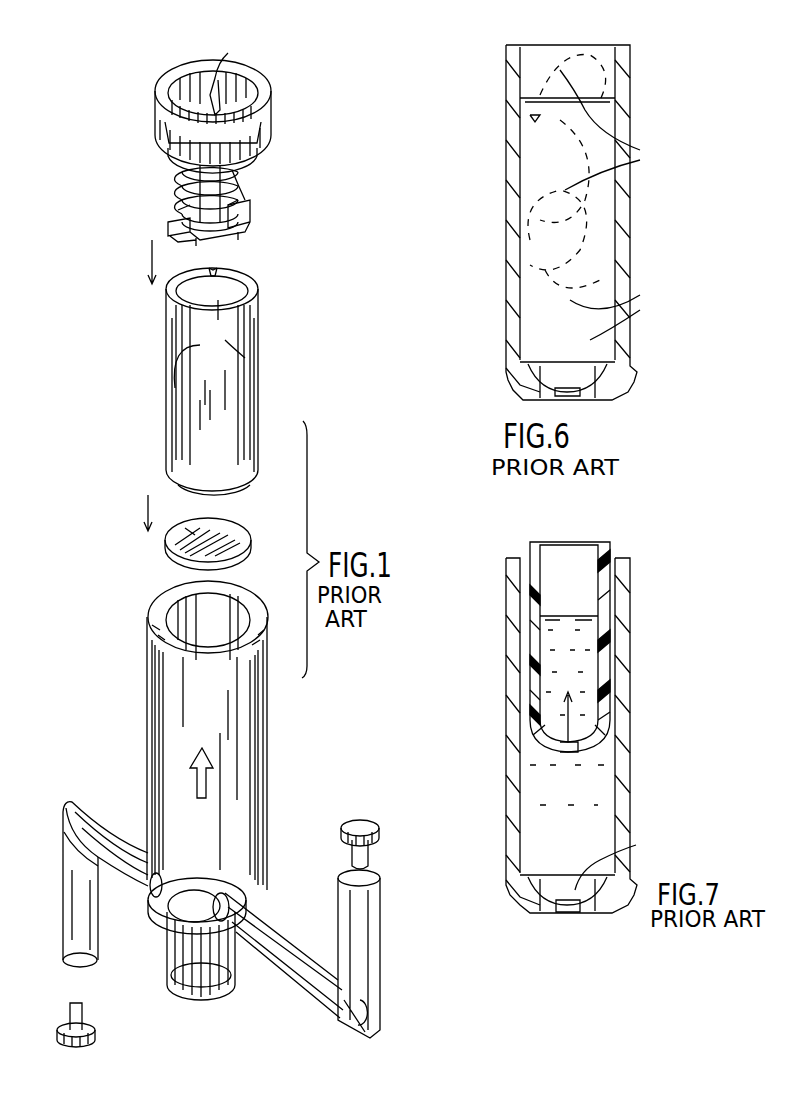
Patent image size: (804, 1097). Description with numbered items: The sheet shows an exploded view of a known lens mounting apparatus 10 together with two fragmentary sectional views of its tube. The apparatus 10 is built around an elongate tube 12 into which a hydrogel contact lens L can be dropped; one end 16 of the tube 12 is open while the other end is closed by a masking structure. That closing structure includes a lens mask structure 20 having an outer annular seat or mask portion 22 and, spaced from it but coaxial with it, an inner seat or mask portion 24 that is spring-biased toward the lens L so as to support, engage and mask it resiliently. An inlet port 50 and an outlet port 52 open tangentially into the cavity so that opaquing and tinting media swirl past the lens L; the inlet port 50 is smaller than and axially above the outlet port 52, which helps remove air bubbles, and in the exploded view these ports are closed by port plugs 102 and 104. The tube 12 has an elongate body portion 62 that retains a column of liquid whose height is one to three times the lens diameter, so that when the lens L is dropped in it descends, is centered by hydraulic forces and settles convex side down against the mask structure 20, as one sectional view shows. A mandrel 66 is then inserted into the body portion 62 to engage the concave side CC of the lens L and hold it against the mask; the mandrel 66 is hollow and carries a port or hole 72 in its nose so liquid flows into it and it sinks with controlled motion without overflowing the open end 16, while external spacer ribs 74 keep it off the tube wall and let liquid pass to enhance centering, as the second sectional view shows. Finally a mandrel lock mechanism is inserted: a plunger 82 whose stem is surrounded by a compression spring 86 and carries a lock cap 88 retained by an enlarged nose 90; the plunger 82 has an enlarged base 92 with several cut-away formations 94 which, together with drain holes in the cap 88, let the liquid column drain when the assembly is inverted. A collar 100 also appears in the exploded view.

In FIG. 1, the lens mounting apparatus 10 is at (221, 809).
In FIG. 1, the elongate tube 12 is at (195, 790).
In FIG. 6, the elongate tube 12 is at (556, 231).
In FIG. 7, the elongate tube 12 is at (552, 744).
In FIG. 1, the open end of tube 16 is at (243, 612).
In FIG. 6, the lens mask structure 20 is at (600, 398).
In FIG. 7, the lens mask structure 20 is at (585, 908).
In FIG. 6, the outer annular seat or mask portion 22 is at (515, 380).
In FIG. 7, the outer annular seat or mask portion 22 is at (520, 893).
In FIG. 6, the inner seat or mask portion 24 is at (535, 394).
In FIG. 7, the inner seat or mask portion 24 is at (556, 905).
In FIG. 1, the inlet port 50 is at (92, 945).
In FIG. 1, the outlet port 52 is at (355, 920).
In FIG. 1, the elongate body portion 62 is at (228, 735).
In FIG. 6, the elongate body portion 62 is at (512, 272).
In FIG. 7, the elongate body portion 62 is at (507, 672).
In FIG. 1, the mandrel 66 is at (194, 381).
In FIG. 7, the mandrel 66 is at (540, 617).
In FIG. 7, the port or hole 72 is at (560, 752).
In FIG. 1, the external spacer ribs 74 is at (214, 275).
In FIG. 1, the plunger 82 is at (292, 112).
In FIG. 1, the compression spring 86 is at (190, 182).
In FIG. 1, the lock cap 88 is at (240, 185).
In FIG. 1, the enlarged nose 90 is at (238, 73).
In FIG. 1, the enlarged base 92 is at (242, 242).
In FIG. 1, the cut-away formations 94 is at (185, 240).
In FIG. 1, the collar 100 is at (168, 786).
In FIG. 1, the port plug 102 is at (95, 1030).
In FIG. 1, the port plug 104 is at (362, 825).
In FIG. 1, the hydrogel contact lens L is at (190, 530).
In FIG. 6, the hydrogel contact lens L is at (609, 205).
In FIG. 7, the hydrogel contact lens L is at (613, 863).
In FIG. 1, the concave side of lens CC is at (240, 535).